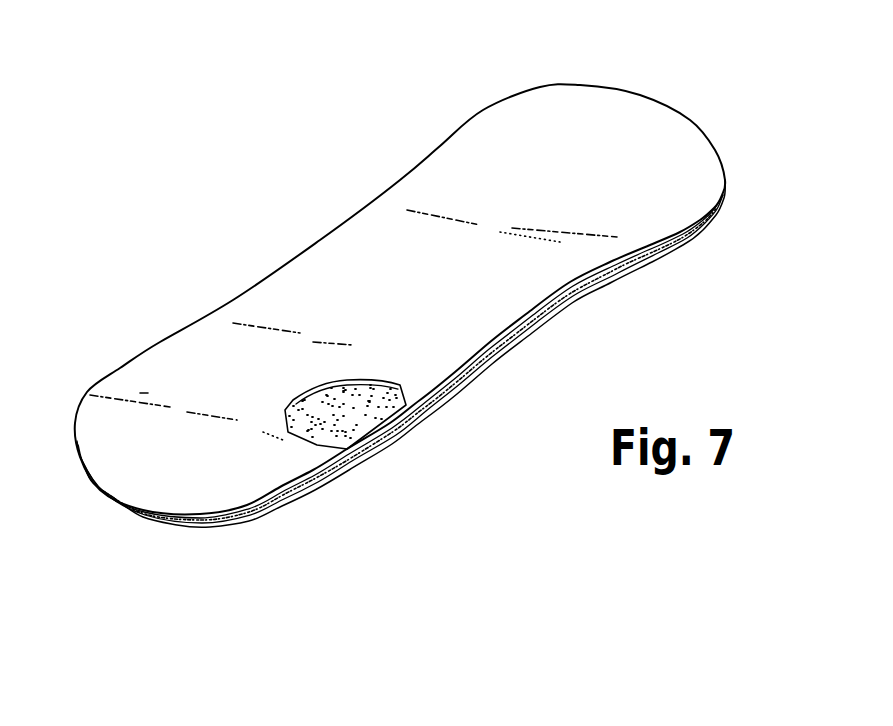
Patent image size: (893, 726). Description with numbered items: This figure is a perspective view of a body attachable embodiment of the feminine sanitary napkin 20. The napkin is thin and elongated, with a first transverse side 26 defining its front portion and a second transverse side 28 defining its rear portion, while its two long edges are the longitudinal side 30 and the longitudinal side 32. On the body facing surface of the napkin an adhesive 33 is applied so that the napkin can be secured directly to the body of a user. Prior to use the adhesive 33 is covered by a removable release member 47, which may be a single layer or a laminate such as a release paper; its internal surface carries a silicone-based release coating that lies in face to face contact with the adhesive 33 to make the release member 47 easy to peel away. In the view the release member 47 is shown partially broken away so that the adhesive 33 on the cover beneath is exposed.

The sanitary napkin 20 is at (337, 92).
The first transverse side 26 is at (108, 510).
The second transverse side 28 is at (700, 90).
The longitudinal side 30 is at (287, 252).
The longitudinal side 32 is at (490, 372).
The adhesive 33 is at (310, 407).
The release member 47 is at (162, 357).